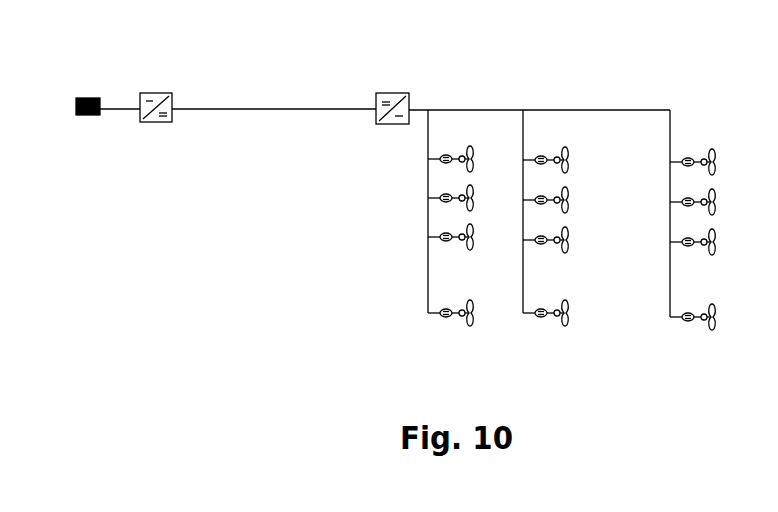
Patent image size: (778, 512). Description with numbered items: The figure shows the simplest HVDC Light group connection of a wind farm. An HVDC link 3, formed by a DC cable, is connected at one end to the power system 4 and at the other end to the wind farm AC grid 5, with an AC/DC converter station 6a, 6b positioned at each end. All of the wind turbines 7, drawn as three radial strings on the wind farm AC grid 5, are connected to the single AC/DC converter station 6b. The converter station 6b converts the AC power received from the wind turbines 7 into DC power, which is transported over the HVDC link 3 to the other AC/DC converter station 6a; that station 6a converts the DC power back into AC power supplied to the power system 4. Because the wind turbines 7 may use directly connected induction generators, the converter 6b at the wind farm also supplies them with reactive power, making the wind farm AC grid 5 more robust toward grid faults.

The HVDC link 3 is at (244, 106).
The power system 4 is at (72, 128).
The wind farm AC grid 5 is at (388, 235).
The AC/DC converter station 6a is at (158, 132).
The AC/DC converter station 6b is at (393, 89).
The wind turbines 7 is at (477, 168).